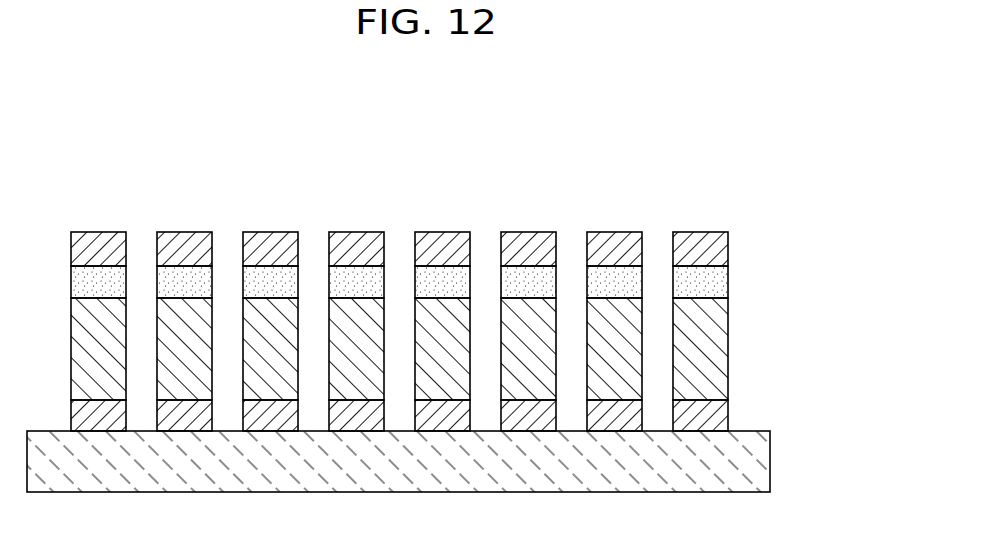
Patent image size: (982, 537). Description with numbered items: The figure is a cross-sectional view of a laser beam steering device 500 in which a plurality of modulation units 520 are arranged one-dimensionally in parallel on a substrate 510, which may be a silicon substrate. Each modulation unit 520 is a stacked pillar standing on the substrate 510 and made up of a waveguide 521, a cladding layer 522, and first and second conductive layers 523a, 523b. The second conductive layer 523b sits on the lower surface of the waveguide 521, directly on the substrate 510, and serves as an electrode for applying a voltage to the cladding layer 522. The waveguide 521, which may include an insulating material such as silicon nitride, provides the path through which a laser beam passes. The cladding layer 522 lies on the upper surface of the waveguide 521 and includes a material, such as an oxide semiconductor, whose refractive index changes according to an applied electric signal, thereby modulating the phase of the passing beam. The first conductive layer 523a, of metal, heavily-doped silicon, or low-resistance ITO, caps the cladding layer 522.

The laser beam steering device 500 is at (438, 300).
The substrate 510 is at (770, 462).
The modulation unit 520 is at (449, 282).
The waveguide 521 is at (728, 350).
The cladding layer 522 is at (728, 282).
The first conductive layer 523a is at (728, 248).
The second conductive layer 523b is at (728, 414).